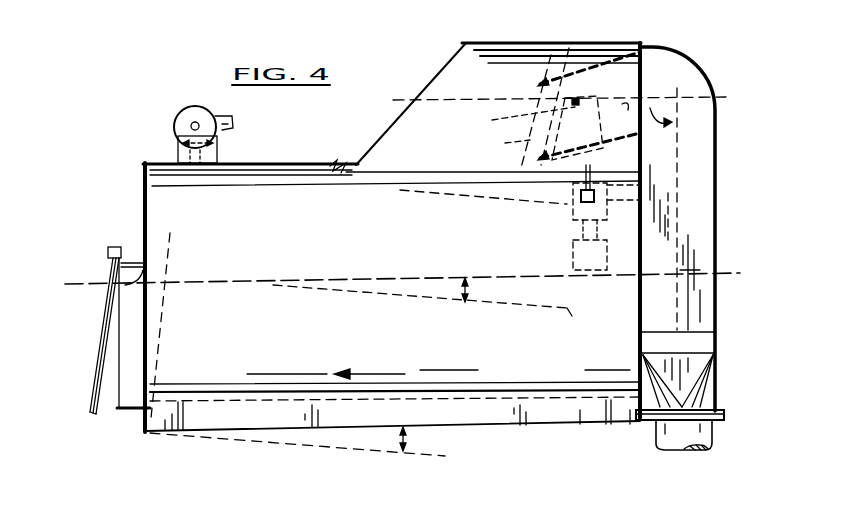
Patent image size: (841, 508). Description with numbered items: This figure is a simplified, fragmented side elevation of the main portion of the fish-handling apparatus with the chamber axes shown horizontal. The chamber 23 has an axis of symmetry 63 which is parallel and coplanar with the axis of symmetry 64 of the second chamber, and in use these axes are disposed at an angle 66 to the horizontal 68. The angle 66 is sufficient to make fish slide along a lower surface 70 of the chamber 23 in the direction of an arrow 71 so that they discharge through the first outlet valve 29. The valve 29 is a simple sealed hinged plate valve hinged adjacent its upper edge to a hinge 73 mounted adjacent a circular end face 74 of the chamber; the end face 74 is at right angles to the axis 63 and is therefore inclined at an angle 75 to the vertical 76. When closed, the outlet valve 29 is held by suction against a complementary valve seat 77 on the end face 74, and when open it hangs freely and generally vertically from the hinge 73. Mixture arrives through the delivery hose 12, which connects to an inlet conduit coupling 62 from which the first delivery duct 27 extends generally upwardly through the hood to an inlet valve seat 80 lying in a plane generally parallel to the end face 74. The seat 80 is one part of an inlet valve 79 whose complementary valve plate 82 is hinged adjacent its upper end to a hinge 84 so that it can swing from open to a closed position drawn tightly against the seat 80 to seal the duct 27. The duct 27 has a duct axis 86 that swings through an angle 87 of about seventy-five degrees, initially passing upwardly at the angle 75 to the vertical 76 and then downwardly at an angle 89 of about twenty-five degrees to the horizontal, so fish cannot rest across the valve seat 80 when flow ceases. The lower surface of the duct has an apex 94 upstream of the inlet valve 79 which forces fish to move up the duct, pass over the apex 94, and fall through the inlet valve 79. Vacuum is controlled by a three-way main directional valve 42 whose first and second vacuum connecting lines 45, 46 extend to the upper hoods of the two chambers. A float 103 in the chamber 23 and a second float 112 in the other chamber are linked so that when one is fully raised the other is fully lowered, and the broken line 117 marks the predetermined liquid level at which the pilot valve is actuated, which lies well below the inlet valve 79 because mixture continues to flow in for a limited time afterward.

The delivery hose 12 is at (718, 436).
The chamber 23 is at (334, 160).
The first delivery duct 27 is at (718, 163).
The first outlet valve 29 is at (93, 373).
The main directional valve 42 is at (180, 115).
The first vacuum connecting line 45 is at (251, 139).
The second vacuum connecting line 46 is at (224, 128).
The inlet conduit coupling 62 is at (717, 352).
The axis of symmetry 63 is at (402, 262).
The axis of symmetry 64 is at (300, 284).
The angle 66 is at (466, 290).
The horizontal 68 is at (446, 100).
The lower surface 70 is at (505, 392).
The arrow 71 is at (372, 374).
The hinge 73 is at (108, 253).
The circular end face 74 is at (141, 194).
The angle 75 is at (150, 298).
The vertical 76 is at (168, 252).
The valve seat 77 is at (118, 398).
The inlet valve 79 is at (531, 80).
The inlet valve seat 80 is at (521, 117).
The valve plate 82 is at (505, 143).
The hinge 84 is at (576, 47).
The duct axis 86 is at (675, 204).
The angle 87 is at (672, 124).
The angle 89 is at (578, 102).
The apex 94 is at (598, 130).
The float 103 is at (578, 210).
The second float 112 is at (575, 262).
The broken line 117 is at (443, 190).